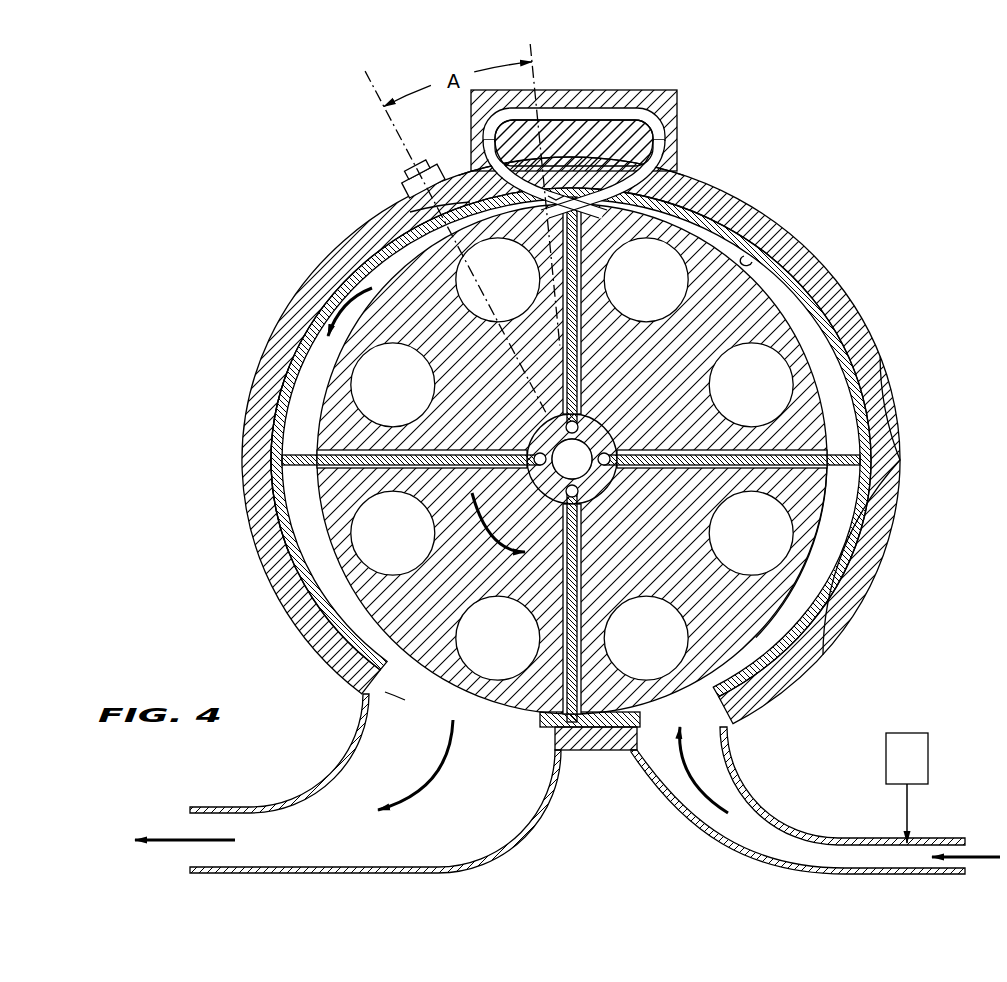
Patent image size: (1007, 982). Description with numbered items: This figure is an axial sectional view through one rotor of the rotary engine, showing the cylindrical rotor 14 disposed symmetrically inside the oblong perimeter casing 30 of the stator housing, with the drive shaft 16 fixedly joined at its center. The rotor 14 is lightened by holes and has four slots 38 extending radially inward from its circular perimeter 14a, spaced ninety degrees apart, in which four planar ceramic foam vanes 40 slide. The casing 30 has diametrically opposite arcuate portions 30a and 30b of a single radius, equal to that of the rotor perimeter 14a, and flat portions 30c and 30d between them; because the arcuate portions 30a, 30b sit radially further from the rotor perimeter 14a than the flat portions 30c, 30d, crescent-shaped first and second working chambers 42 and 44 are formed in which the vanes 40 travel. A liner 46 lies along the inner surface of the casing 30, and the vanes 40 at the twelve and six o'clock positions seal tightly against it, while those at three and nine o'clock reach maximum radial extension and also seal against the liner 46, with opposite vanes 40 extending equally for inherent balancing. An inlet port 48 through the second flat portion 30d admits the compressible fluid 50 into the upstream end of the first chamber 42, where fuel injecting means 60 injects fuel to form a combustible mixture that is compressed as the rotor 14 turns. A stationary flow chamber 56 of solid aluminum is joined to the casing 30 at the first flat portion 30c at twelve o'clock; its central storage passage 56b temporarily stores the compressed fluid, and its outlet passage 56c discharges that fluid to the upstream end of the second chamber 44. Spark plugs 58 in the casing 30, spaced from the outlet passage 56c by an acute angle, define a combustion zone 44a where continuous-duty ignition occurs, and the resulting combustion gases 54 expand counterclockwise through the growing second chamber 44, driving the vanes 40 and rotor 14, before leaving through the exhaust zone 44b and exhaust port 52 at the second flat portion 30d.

The rotor 14 is at (656, 390).
The circular perimeter 14a is at (835, 562).
The drive shaft 16 is at (581, 470).
The perimeter casing 30 is at (822, 253).
The first arcuate portion 30a is at (889, 355).
The second arcuate portion 30b is at (258, 376).
The first flat portion 30c is at (648, 173).
The second flat portion 30d is at (612, 753).
The slots 38 is at (280, 488).
The vanes 40 is at (287, 452).
The first working chamber 42 is at (838, 421).
The second working chamber 44 is at (305, 413).
The combustion zone 44a is at (437, 214).
The exhaust zone 44b is at (385, 692).
The liner 46 is at (744, 256).
The inlet port 48 is at (738, 748).
The compressible fluid 50 is at (690, 772).
The exhaust port 52 is at (391, 765).
The combustion gases 54 is at (347, 306).
The flow chamber 56 is at (614, 87).
The storage passage 56b is at (585, 131).
The outlet passage 56c is at (554, 222).
The spark plugs 58 is at (418, 165).
The fuel injecting means 60 is at (929, 756).